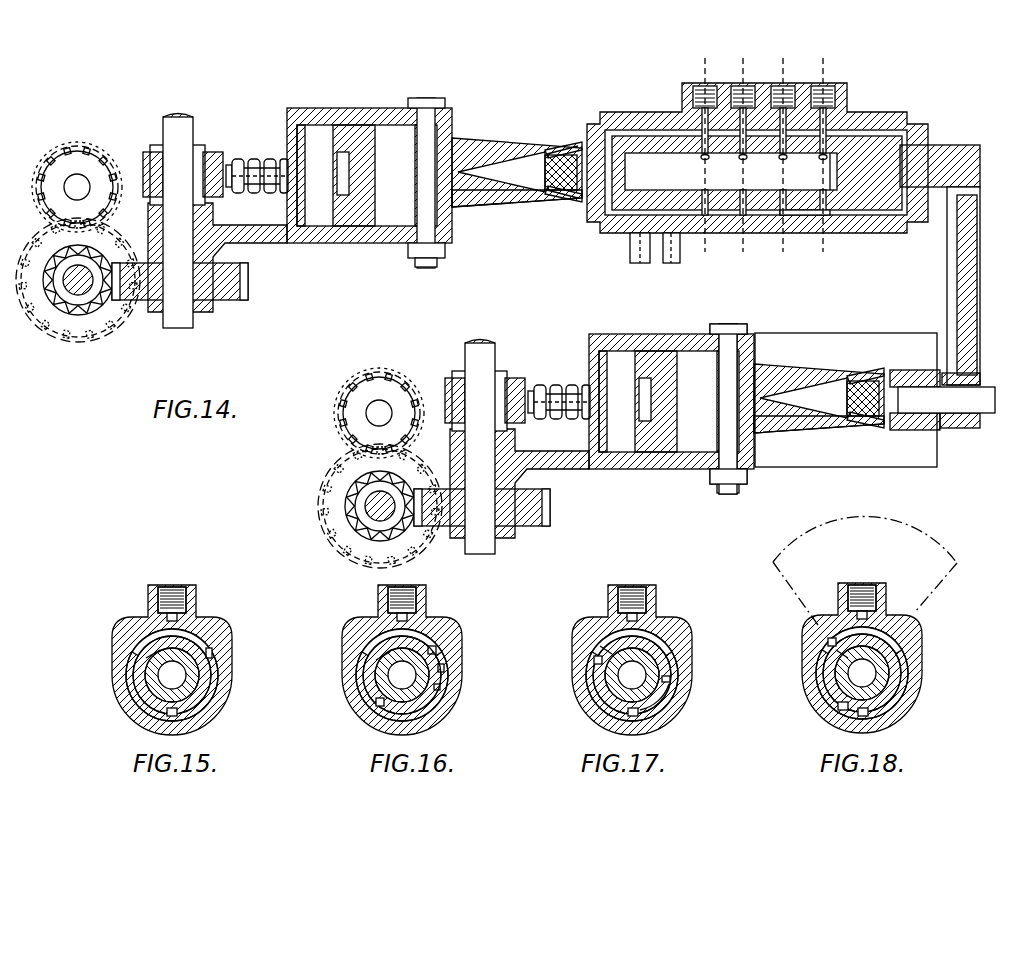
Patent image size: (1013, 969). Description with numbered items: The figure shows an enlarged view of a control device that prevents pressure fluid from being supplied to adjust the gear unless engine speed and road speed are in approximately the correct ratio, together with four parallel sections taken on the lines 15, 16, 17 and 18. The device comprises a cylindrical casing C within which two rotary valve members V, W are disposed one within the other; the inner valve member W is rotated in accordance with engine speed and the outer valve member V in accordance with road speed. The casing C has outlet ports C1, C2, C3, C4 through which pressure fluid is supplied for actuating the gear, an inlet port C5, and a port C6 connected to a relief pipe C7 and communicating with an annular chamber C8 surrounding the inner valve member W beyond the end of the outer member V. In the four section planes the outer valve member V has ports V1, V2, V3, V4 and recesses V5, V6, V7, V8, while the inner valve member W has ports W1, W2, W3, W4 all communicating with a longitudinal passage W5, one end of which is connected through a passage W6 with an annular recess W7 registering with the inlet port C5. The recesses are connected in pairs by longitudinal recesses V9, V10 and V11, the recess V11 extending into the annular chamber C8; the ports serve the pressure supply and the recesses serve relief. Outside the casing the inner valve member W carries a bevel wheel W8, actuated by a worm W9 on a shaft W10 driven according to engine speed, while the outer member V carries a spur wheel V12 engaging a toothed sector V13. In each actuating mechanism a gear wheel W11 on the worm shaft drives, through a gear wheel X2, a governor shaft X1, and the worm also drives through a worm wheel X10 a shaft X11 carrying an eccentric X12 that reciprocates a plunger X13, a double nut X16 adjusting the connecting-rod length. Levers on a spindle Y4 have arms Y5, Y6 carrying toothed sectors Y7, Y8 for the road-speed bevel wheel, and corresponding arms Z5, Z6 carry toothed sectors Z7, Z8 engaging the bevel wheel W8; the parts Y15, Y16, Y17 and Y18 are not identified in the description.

In FIG. 14, the shaft X1 is at (82, 182).
In FIG. 14, the gear wheel X2 is at (77, 147).
In FIG. 14, the worm wheel X10 is at (230, 292).
In FIG. 14, the shaft X11 is at (180, 308).
In FIG. 14, the eccentric X12 is at (210, 158).
In FIG. 14, the plunger X13 is at (353, 150).
In FIG. 14, the double nut X16 is at (268, 158).
In FIG. 14, the worm W9 is at (93, 312).
In FIG. 14, the shaft W10 is at (70, 268).
In FIG. 14, the gear wheel W11 is at (57, 338).
In FIG. 14, the port W1 is at (814, 171).
In FIG. 18, the port W1 is at (836, 660).
In FIG. 14, the port W2 is at (791, 169).
In FIG. 17, the port W2 is at (600, 646).
In FIG. 14, the port W3 is at (751, 169).
In FIG. 16, the port W3 is at (386, 659).
In FIG. 14, the port W4 is at (710, 169).
In FIG. 15, the port W4 is at (142, 652).
In FIG. 14, the longitudinal passage W5 is at (674, 168).
In FIG. 15, the longitudinal passage W5 is at (150, 674).
In FIG. 16, the longitudinal passage W5 is at (390, 678).
In FIG. 17, the longitudinal passage W5 is at (664, 648).
In FIG. 18, the longitudinal passage W5 is at (890, 675).
In FIG. 14, the passage W6 is at (594, 208).
In FIG. 14, the annular recess W7 is at (634, 130).
In FIG. 14, the bevel wheel W8 is at (553, 158).
In FIG. 15, the inner valve member W is at (148, 696).
In FIG. 16, the inner valve member W is at (376, 690).
In FIG. 17, the inner valve member W is at (606, 690).
In FIG. 18, the inner valve member W is at (838, 675).
In FIG. 14, the arm Z5 is at (490, 200).
In FIG. 14, the arm Z6 is at (510, 156).
In FIG. 14, the toothed sector Z7 is at (553, 192).
In FIG. 14, the toothed sector Z8 is at (566, 142).
In FIG. 14, the cylindrical casing C is at (866, 135).
In FIG. 15, the cylindrical casing C is at (130, 625).
In FIG. 16, the cylindrical casing C is at (365, 622).
In FIG. 17, the cylindrical casing C is at (595, 622).
In FIG. 18, the cylindrical casing C is at (826, 620).
In FIG. 14, the outlet port C1 is at (826, 115).
In FIG. 18, the outlet port C1 is at (880, 634).
In FIG. 14, the outlet port C2 is at (784, 122).
In FIG. 17, the outlet port C2 is at (646, 636).
In FIG. 14, the outlet port C3 is at (744, 122).
In FIG. 16, the outlet port C3 is at (417, 636).
In FIG. 14, the outlet port C4 is at (706, 122).
In FIG. 15, the outlet port C4 is at (190, 638).
In FIG. 14, the inlet port C5 is at (630, 238).
In FIG. 14, the port C6 is at (676, 258).
In FIG. 14, the relief pipe C7 is at (666, 260).
In FIG. 14, the annular chamber C8 is at (664, 135).
In FIG. 14, the outer valve member V is at (756, 216).
In FIG. 16, the outer valve member V is at (432, 642).
In FIG. 17, the outer valve member V is at (600, 676).
In FIG. 18, the outer valve member V is at (892, 656).
In FIG. 18, the port V1 is at (830, 645).
In FIG. 17, the port V2 is at (596, 661).
In FIG. 16, the port V3 is at (380, 706).
In FIG. 14, the port V4 is at (708, 216).
In FIG. 15, the port V4 is at (200, 702).
In FIG. 14, the recess V5 is at (828, 216).
In FIG. 18, the recess V5 is at (840, 706).
In FIG. 17, the recess V6 is at (668, 698).
In FIG. 16, the recess V7 is at (444, 669).
In FIG. 15, the recess V8 is at (216, 652).
In FIG. 14, the longitudinal recess V9 is at (787, 216).
In FIG. 17, the longitudinal recess V9 is at (652, 722).
In FIG. 18, the longitudinal recess V9 is at (888, 712).
In FIG. 16, the longitudinal recess V10 is at (442, 686).
In FIG. 17, the longitudinal recess V10 is at (668, 680).
In FIG. 16, the longitudinal recess V11 is at (438, 654).
In FIG. 14, the spur wheel V12 is at (958, 150).
In FIG. 14, the toothed sector V13 is at (954, 212).
In FIG. 14, the spindle Y4 is at (730, 458).
In FIG. 14, the arm Y5 is at (800, 430).
In FIG. 14, the arm Y6 is at (802, 368).
In FIG. 14, the toothed sector Y7 is at (850, 428).
In FIG. 14, the toothed sector Y8 is at (862, 368).
In FIG. 14, the fitting Y15 is at (891, 430).
In FIG. 14, the bearing Y16 is at (345, 505).
In FIG. 14, the shaft end Y17 is at (376, 500).
In FIG. 14, the gear Y18 is at (340, 488).
In FIG. 14, the section line 15 is at (706, 157).
In FIG. 14, the section line 16 is at (745, 157).
In FIG. 14, the section line 17 is at (785, 157).
In FIG. 14, the section line 18 is at (824, 157).